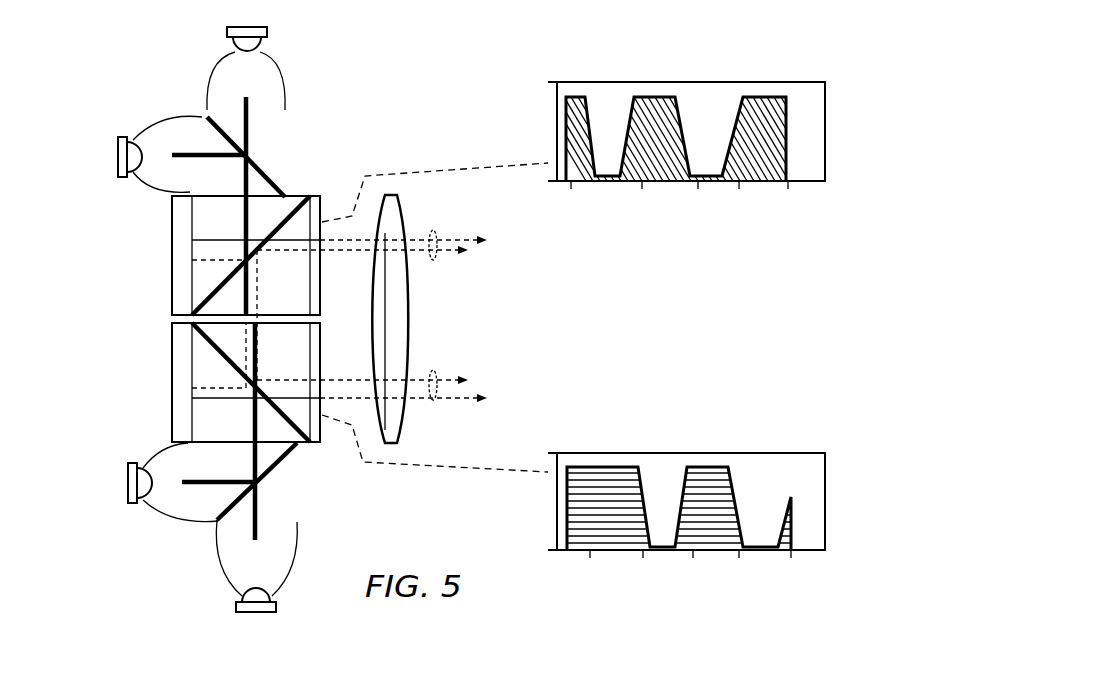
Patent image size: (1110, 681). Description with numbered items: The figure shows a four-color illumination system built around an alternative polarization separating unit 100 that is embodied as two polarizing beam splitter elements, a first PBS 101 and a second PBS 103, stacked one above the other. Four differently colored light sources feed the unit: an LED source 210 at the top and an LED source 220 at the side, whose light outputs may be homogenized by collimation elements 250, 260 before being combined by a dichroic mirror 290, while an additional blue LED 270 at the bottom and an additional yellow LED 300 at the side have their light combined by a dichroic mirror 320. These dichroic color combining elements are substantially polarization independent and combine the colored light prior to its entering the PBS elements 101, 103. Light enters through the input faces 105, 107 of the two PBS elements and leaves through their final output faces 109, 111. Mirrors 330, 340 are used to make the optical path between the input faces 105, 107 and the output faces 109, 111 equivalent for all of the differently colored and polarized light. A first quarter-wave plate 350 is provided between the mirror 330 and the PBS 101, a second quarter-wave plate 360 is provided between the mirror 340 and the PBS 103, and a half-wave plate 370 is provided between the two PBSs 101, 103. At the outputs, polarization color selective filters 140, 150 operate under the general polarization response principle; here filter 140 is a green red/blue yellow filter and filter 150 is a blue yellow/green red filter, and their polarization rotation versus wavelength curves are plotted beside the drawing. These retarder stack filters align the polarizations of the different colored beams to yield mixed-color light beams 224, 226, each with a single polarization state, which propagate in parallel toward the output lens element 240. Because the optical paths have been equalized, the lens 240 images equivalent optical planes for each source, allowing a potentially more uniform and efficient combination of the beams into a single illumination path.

The polarization separating unit 100 is at (138, 333).
The first PBS element 101 is at (303, 188).
The second PBS element 103 is at (303, 456).
The input face 105 is at (232, 195).
The input face 107 is at (242, 445).
The output face 109 is at (313, 292).
The output face 111 is at (345, 343).
The polarization color selective filter 140 is at (322, 203).
The polarization color selective filter 150 is at (322, 414).
The LED source 210 is at (230, 30).
The LED source 220 is at (118, 150).
The light beam 224 is at (433, 232).
The light beam 226 is at (433, 401).
The lens 240 is at (410, 322).
The collimation element 250 is at (284, 74).
The collimation element 260 is at (168, 118).
The LED 270 is at (236, 607).
The dichroic mirror 290 is at (268, 172).
The LED 300 is at (125, 488).
The dichroic mirror 320 is at (267, 474).
The mirror 330 is at (172, 216).
The mirror 340 is at (172, 412).
The first quarter-wave plate 350 is at (190, 299).
The second quarter-wave plate 360 is at (190, 374).
The half-wave plate 370 is at (272, 318).